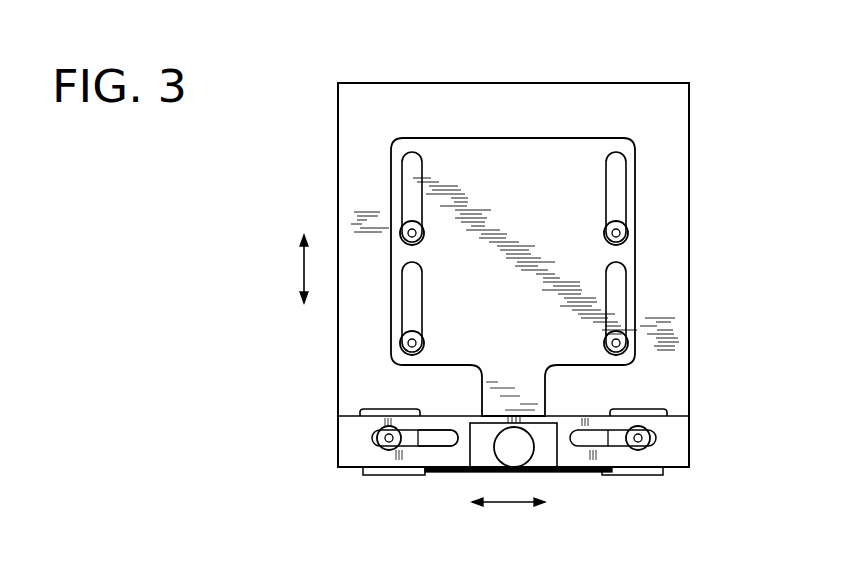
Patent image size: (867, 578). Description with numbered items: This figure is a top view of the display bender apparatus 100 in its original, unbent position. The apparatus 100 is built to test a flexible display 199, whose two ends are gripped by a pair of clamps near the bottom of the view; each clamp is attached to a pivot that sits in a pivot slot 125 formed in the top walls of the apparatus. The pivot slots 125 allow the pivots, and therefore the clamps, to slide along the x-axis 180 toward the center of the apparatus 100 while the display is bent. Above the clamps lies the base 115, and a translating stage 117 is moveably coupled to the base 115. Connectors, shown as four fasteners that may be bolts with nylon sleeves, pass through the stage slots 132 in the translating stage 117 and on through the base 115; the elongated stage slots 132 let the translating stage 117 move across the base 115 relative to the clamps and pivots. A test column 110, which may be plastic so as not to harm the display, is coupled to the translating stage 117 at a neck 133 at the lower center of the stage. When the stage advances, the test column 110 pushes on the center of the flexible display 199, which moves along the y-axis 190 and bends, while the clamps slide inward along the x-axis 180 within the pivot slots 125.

The display bender apparatus 100 is at (748, 512).
The test column 110 is at (498, 448).
The base 115 is at (658, 126).
The translating stage 117 is at (445, 155).
The pivot slots 125 is at (442, 441).
The stage slots 132 is at (618, 183).
The neck 133 is at (517, 393).
The x-axis 180 is at (505, 507).
The y-axis 190 is at (300, 268).
The flexible display 199 is at (553, 474).